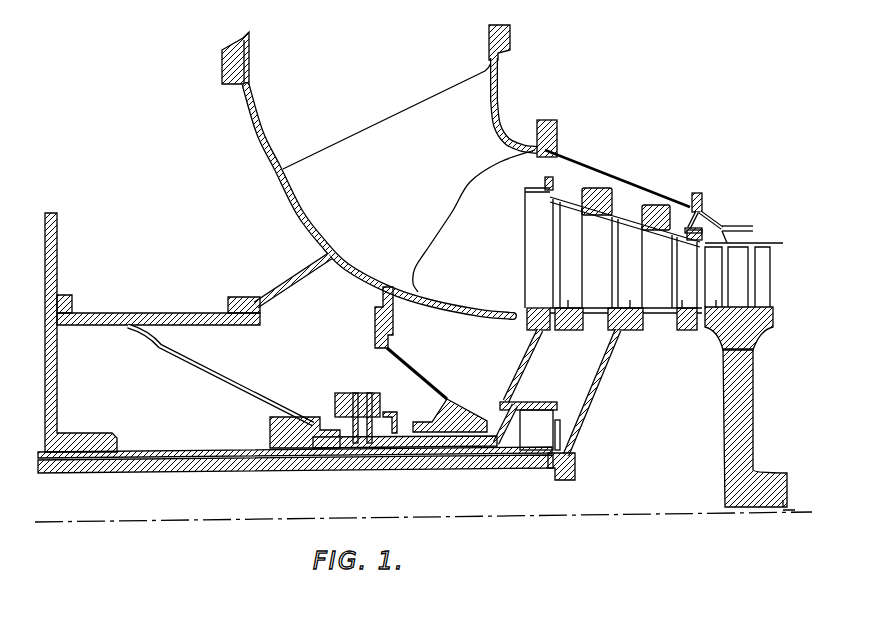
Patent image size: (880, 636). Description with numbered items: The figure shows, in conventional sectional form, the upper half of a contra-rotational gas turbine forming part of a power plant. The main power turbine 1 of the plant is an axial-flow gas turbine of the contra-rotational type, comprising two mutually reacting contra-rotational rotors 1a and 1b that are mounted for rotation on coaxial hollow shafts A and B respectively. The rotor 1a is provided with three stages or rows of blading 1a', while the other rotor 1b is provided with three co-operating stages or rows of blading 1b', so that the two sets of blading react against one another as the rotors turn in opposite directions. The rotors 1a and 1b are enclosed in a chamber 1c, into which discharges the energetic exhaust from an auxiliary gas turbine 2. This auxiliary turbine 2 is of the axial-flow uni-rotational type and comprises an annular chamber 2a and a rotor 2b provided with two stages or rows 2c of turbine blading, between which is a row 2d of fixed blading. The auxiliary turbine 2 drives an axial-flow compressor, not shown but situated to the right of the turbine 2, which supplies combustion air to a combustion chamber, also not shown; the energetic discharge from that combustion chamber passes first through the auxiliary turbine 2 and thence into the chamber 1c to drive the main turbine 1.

The main power turbine 1 is at (606, 430).
The rotor 1a is at (618, 396).
The blading 1a' is at (642, 351).
The rotor 1b is at (599, 296).
The blading 1b' is at (592, 252).
The chamber 1c is at (468, 294).
The auxiliary gas turbine 2 is at (746, 220).
The annular chamber 2a is at (750, 239).
The rotor 2b is at (728, 433).
The turbine blading 2c is at (716, 312).
The fixed blading 2d is at (745, 278).
The hollow shaft A is at (57, 471).
The hollow shaft B is at (46, 452).